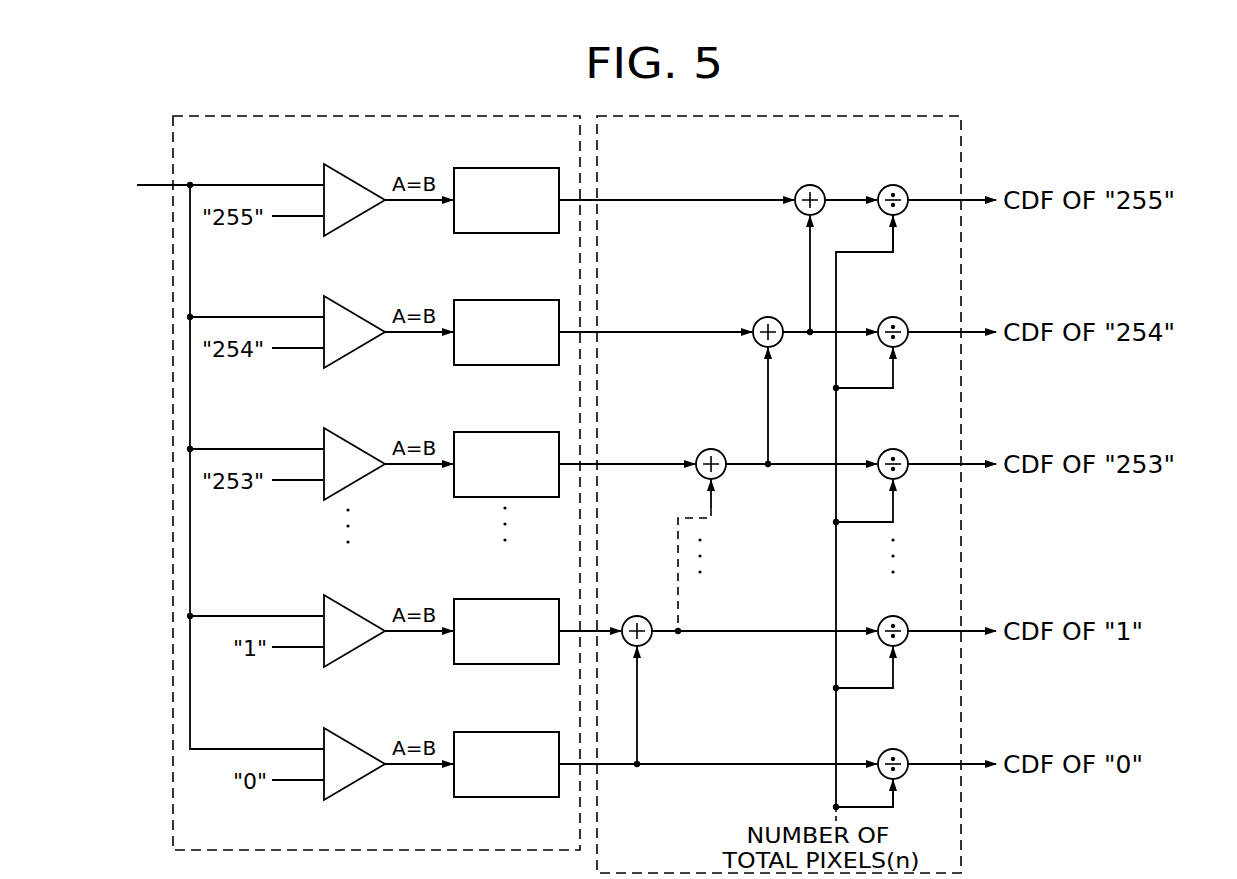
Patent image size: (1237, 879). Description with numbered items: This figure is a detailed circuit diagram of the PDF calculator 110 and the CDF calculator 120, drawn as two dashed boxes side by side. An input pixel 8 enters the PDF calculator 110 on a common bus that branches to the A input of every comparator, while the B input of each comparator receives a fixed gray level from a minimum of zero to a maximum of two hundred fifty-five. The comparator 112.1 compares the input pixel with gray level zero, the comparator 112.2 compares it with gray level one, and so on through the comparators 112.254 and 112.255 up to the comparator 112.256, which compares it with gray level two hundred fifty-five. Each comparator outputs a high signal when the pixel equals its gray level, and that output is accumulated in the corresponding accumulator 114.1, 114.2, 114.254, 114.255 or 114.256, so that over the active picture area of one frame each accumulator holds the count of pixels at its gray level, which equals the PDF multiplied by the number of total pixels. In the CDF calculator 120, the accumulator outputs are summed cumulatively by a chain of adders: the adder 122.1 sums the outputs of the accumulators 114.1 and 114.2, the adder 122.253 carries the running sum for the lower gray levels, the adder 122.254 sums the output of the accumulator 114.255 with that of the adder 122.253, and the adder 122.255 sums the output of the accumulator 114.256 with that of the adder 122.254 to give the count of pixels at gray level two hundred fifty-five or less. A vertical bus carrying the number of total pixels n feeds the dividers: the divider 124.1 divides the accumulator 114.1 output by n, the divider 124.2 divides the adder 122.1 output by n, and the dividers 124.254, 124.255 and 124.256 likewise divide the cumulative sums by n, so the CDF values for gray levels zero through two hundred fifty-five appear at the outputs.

The input pixel data 8 is at (221, 463).
The PDF calculator 110 is at (173, 282).
The CDF calculator 120 is at (961, 152).
The comparator 112.256 is at (351, 172).
The comparator 112.255 is at (351, 304).
The comparator 112.254 is at (351, 436).
The comparator 112.2 is at (351, 603).
The comparator 112.1 is at (351, 736).
The accumulator 114.256 is at (502, 168).
The accumulator 114.255 is at (502, 300).
The accumulator 114.254 is at (502, 432).
The accumulator 114.2 is at (502, 599).
The accumulator 114.1 is at (502, 732).
The adder 122.255 is at (806, 184).
The adder 122.254 is at (766, 316).
The adder 122.253 is at (709, 448).
The adder 122.1 is at (648, 642).
The divider 124.256 is at (892, 184).
The divider 124.255 is at (892, 316).
The divider 124.254 is at (892, 448).
The divider 124.2 is at (892, 615).
The divider 124.1 is at (893, 748).